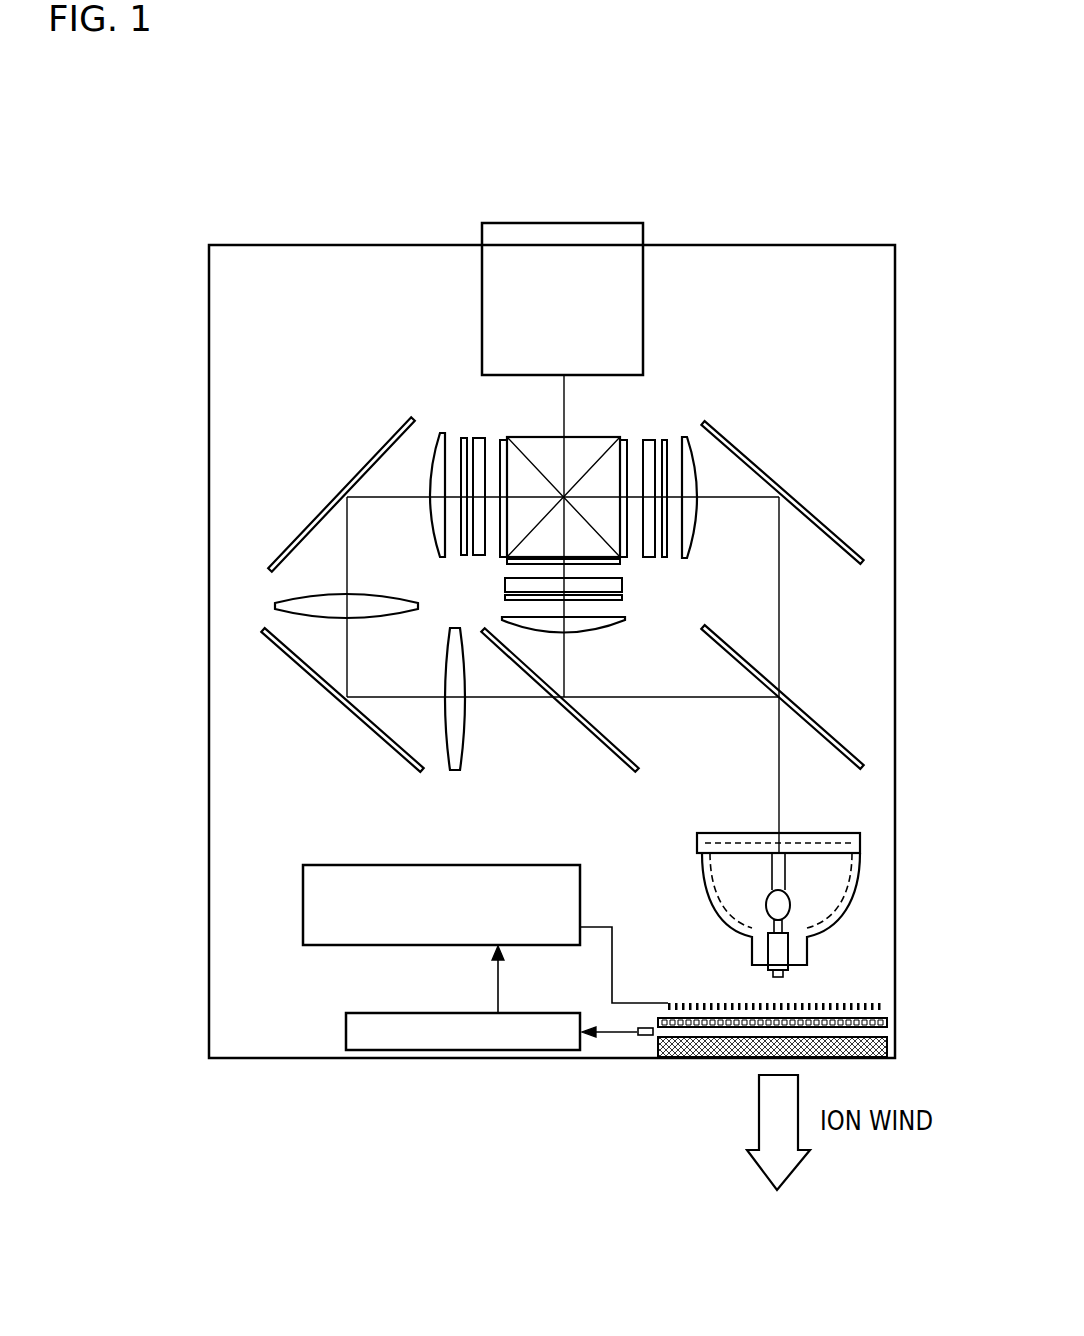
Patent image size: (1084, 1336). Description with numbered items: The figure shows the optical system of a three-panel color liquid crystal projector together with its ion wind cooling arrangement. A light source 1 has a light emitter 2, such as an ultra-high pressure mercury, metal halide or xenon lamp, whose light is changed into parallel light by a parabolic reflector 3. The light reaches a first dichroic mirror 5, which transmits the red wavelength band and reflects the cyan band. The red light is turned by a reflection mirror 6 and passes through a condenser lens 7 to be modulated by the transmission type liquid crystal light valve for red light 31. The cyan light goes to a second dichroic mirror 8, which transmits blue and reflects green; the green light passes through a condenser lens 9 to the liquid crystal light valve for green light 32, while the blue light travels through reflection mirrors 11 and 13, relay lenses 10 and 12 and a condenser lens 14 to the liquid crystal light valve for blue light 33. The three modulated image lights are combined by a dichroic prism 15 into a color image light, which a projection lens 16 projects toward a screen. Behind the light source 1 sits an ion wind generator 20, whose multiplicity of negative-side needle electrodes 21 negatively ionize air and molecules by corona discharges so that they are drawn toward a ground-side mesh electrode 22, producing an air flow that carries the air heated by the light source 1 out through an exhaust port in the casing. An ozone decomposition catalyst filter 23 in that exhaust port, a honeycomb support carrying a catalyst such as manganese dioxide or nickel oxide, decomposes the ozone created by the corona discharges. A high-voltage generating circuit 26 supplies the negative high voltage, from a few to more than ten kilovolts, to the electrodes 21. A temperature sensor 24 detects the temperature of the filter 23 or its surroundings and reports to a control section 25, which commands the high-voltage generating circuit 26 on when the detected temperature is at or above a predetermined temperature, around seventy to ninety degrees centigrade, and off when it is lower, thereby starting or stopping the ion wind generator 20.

The light source 1 is at (748, 905).
The light emitter 2 is at (772, 906).
The parabolic reflector 3 is at (755, 925).
The first dichroic mirror 5 is at (828, 726).
The reflection mirror 6 is at (823, 517).
The condenser lens 7 is at (694, 533).
The second dichroic mirror 8 is at (585, 731).
The condenser lens 9 is at (590, 630).
The relay lens 10 is at (455, 774).
The reflection mirror 11 is at (357, 719).
The relay lens 12 is at (275, 607).
The reflection mirror 13 is at (307, 525).
The condenser lens 14 is at (430, 518).
The dichroic prism 15 is at (535, 440).
The projection lens 16 is at (643, 303).
The ion wind generator 20 is at (806, 1021).
The needle electrodes 21 is at (883, 1005).
The mesh electrode 22 is at (888, 1023).
The ozone decomposition catalyst filter 23 is at (888, 1047).
The temperature sensor 24 is at (645, 1038).
The control section 25 is at (497, 1055).
The high-voltage generating circuit 26 is at (303, 913).
The liquid crystal light valve for red light 31 is at (655, 424).
The liquid crystal light valve for green light 32 is at (636, 597).
The liquid crystal light valve for blue light 33 is at (470, 424).